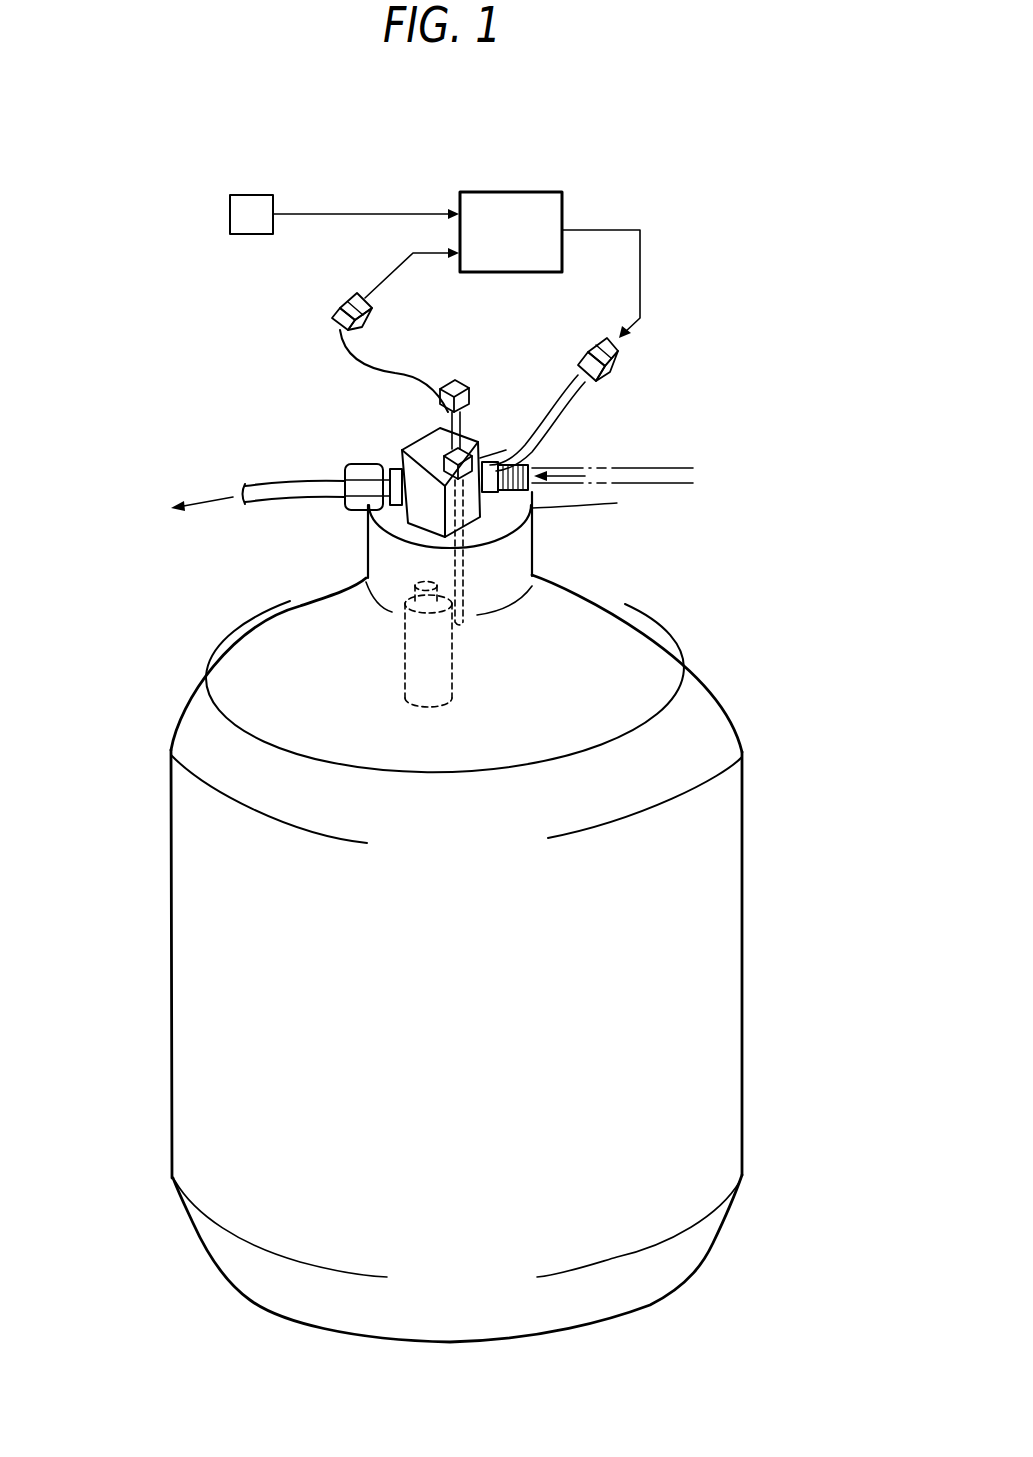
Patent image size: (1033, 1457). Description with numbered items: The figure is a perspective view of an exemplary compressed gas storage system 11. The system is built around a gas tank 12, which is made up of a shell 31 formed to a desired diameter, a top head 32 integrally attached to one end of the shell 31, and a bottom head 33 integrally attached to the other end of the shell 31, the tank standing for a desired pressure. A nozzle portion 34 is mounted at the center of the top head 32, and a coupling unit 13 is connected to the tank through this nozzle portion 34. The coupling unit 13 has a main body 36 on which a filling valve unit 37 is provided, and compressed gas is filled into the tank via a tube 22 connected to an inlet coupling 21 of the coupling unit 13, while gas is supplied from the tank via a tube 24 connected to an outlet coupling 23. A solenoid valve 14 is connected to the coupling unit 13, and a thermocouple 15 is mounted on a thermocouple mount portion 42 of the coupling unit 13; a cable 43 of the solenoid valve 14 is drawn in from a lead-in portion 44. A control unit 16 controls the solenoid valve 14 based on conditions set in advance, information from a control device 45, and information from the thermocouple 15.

The fluid supply system 11 is at (170, 249).
The gas tank 12 is at (182, 667).
The coupling unit 13 is at (390, 447).
The solenoid valve 14 is at (390, 630).
The thermocouple 15 is at (440, 422).
The control unit 16 is at (525, 185).
The inlet coupling 21 is at (522, 460).
The tube 22 is at (659, 467).
The outlet coupling 23 is at (349, 468).
The tube 24 is at (252, 483).
The shell 31 is at (170, 864).
The top head 32 is at (628, 612).
The bottom head 33 is at (718, 1243).
The nozzle portion 34 is at (533, 551).
The main body 36 is at (418, 444).
The filling valve unit 37 is at (617, 503).
The thermocouple mount portion 42 is at (476, 452).
The cable 43 is at (527, 427).
The lead-in portion 44 is at (500, 452).
The control device 45 is at (252, 193).